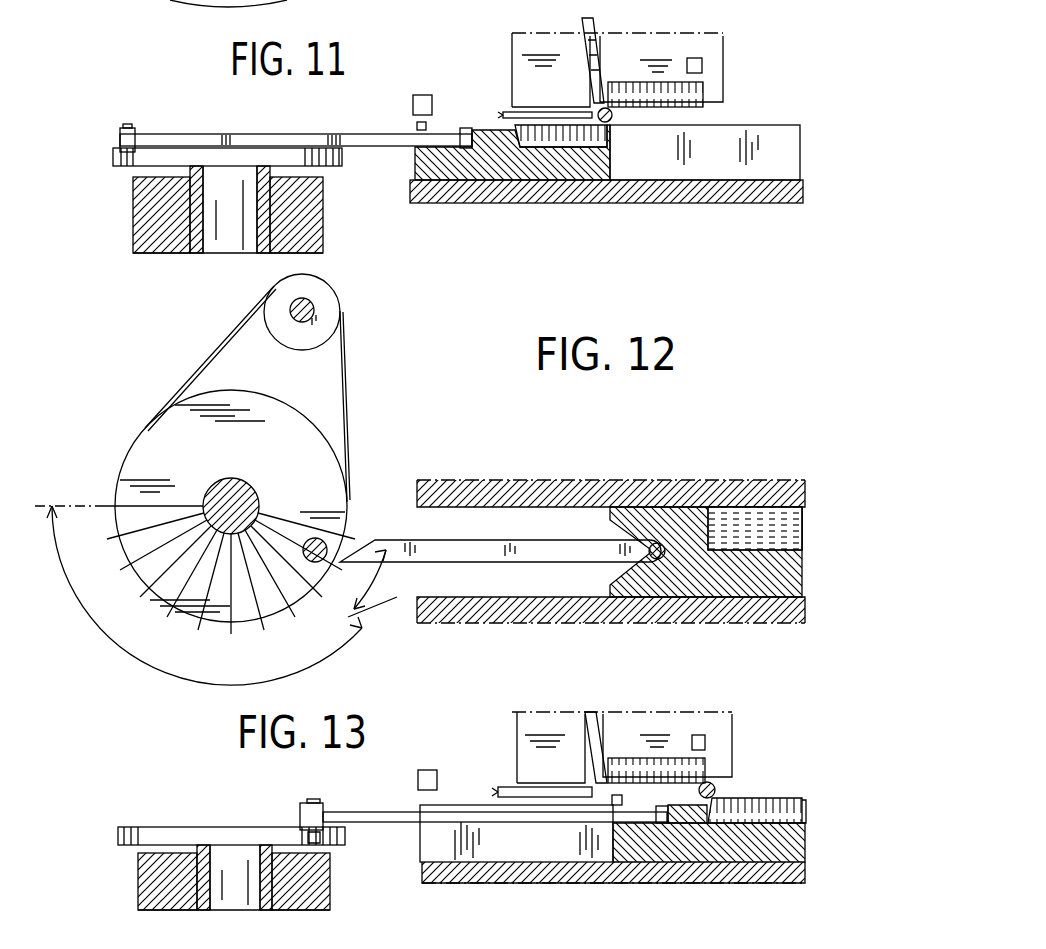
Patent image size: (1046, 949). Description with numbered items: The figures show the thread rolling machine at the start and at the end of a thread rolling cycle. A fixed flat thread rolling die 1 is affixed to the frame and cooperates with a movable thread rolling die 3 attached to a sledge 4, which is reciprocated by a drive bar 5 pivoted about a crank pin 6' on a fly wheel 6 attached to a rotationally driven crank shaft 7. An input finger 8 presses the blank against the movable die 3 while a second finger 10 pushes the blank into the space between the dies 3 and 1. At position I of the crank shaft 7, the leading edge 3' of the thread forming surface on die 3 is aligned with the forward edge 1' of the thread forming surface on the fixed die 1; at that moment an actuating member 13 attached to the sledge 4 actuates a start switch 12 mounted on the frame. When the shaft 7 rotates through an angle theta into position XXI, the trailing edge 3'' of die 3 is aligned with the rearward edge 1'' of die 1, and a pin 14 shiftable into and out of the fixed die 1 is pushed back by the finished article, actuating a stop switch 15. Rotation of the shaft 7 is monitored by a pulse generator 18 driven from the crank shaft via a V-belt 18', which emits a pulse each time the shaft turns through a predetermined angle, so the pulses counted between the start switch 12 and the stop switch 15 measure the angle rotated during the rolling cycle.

In FIG. 11, the flat thread rolling die 1 is at (617, 57).
In FIG. 13, the flat thread rolling die 1 is at (622, 725).
In FIG. 11, the forward edge of thread forming surface on fixed die 1' is at (620, 84).
In FIG. 13, the rearward edge of die 1'' is at (739, 779).
In FIG. 11, the movable thread rolling die 3 is at (561, 150).
In FIG. 12, the movable thread rolling die 3 is at (777, 527).
In FIG. 13, the movable thread rolling die 3 is at (767, 789).
In FIG. 11, the leading edge of thread forming surface on block 3' is at (705, 152).
In FIG. 13, the trailing edge of die 3'' is at (697, 832).
In FIG. 11, the sledge 4 is at (485, 137).
In FIG. 12, the sledge 4 is at (804, 580).
In FIG. 13, the sledge 4 is at (626, 843).
In FIG. 11, the drive bar 5 is at (320, 139).
In FIG. 12, the drive bar 5 is at (490, 545).
In FIG. 13, the drive bar 5 is at (386, 811).
In FIG. 11, the fly wheel 6 is at (227, 131).
In FIG. 12, the fly wheel 6 is at (216, 521).
In FIG. 13, the fly wheel 6 is at (231, 815).
In FIG. 12, the crank pin 6' is at (315, 522).
In FIG. 11, the crank shaft 7 is at (232, 175).
In FIG. 12, the crank shaft 7 is at (254, 497).
In FIG. 13, the crank shaft 7 is at (238, 855).
In FIG. 11, the input finger 8 is at (587, 20).
In FIG. 11, the second finger 10 is at (515, 113).
In FIG. 13, the second finger 10 is at (535, 790).
In FIG. 11, the start switch 12 is at (422, 95).
In FIG. 13, the start switch 12 is at (432, 770).
In FIG. 11, the actuating member 13 is at (417, 125).
In FIG. 13, the actuating member 13 is at (612, 797).
In FIG. 11, the pin 14 is at (708, 90).
In FIG. 13, the pin 14 is at (708, 770).
In FIG. 11, the stop switch 15 is at (694, 58).
In FIG. 13, the stop switch 15 is at (698, 735).
In FIG. 12, the pulse generator 18 is at (320, 310).
In FIG. 12, the V-belt 18' is at (247, 394).